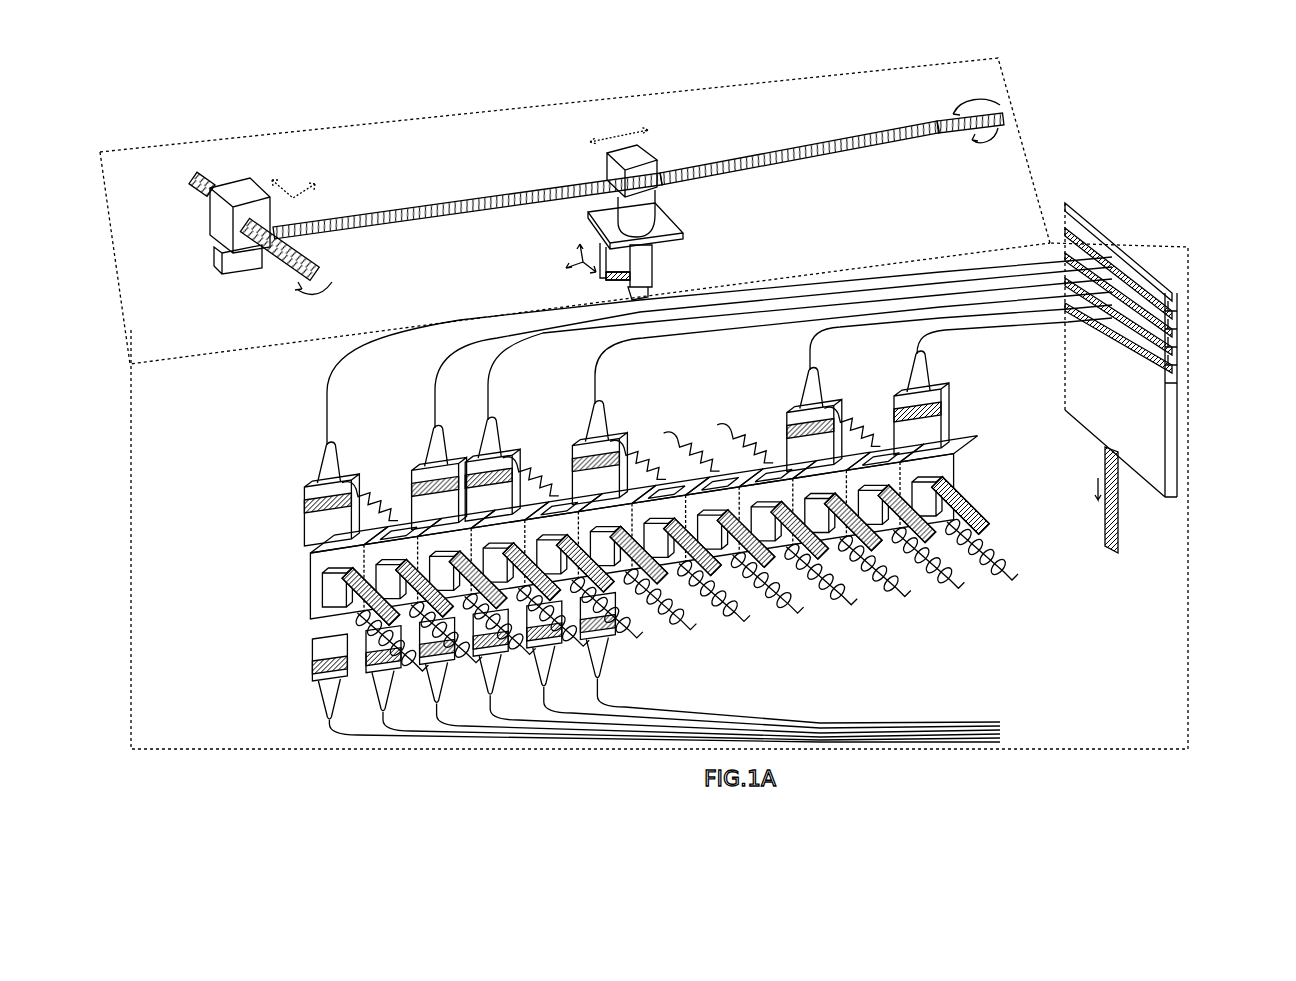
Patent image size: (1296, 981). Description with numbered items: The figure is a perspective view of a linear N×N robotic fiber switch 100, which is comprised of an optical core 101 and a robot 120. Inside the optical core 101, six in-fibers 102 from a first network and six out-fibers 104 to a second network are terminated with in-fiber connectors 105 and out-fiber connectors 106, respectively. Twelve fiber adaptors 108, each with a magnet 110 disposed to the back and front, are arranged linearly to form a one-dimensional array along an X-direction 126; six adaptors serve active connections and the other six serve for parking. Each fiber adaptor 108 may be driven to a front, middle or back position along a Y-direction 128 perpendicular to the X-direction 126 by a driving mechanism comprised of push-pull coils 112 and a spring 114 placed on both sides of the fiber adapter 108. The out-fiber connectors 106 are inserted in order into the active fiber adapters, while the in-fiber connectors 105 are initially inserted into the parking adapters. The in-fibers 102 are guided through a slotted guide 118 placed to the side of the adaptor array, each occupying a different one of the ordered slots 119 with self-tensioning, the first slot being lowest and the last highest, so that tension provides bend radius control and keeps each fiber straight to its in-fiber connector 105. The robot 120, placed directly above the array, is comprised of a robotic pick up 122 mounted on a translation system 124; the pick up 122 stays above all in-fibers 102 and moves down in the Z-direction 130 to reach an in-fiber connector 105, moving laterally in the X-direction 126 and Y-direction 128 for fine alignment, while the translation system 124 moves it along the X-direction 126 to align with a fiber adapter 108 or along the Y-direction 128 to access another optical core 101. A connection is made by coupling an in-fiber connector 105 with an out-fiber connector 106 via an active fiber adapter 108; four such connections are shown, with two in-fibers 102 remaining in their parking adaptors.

The linear N×N robotic fiber switch 100 is at (1118, 186).
The optical core 101 is at (1189, 685).
The in-fibers 102 is at (1108, 558).
The out-fibers 104 is at (890, 722).
The in-fiber connectors 105 is at (790, 420).
The out-fiber connectors 106 is at (318, 652).
The fiber adaptors 108 is at (305, 578).
The magnet 110 is at (320, 600).
The push-pull coils 112 is at (256, 514).
The spring 114 is at (985, 522).
The slotted guide 118 is at (1088, 408).
The slots 119 is at (1186, 333).
The robot 120 is at (338, 128).
The robotic pick up 122 is at (685, 280).
The translation system 124 is at (275, 216).
The X-direction 126 is at (648, 131).
The Y-direction 128 is at (317, 167).
The Z-direction 130 is at (562, 254).